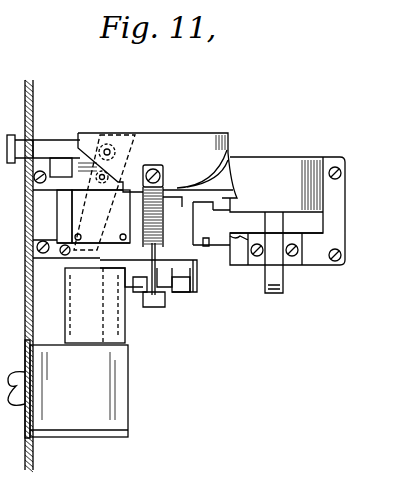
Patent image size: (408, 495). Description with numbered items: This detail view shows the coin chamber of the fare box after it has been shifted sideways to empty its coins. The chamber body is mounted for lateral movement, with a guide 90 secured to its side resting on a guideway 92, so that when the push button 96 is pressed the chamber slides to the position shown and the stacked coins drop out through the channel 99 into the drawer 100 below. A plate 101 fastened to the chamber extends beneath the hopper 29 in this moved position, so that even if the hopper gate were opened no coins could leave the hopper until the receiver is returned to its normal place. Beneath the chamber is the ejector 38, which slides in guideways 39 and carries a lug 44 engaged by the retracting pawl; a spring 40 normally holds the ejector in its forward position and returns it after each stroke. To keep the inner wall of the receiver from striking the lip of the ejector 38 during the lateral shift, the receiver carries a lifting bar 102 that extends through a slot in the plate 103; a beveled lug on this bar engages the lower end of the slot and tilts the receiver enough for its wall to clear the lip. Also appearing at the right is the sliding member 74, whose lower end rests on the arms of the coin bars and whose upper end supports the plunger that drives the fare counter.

The push button 96 is at (45, 146).
The hopper 29 is at (140, 137).
The spring 40 is at (173, 181).
The guide 90 is at (104, 192).
The plate 101 is at (167, 206).
The lifting bar 102 is at (206, 240).
The member 74 is at (283, 282).
The guideway 92 is at (75, 257).
The plate 103 is at (196, 275).
The channel 99 is at (113, 325).
The guideways 39 is at (124, 288).
The ejector 38 is at (152, 283).
The lug 44 is at (160, 306).
The drawer 100 is at (118, 402).